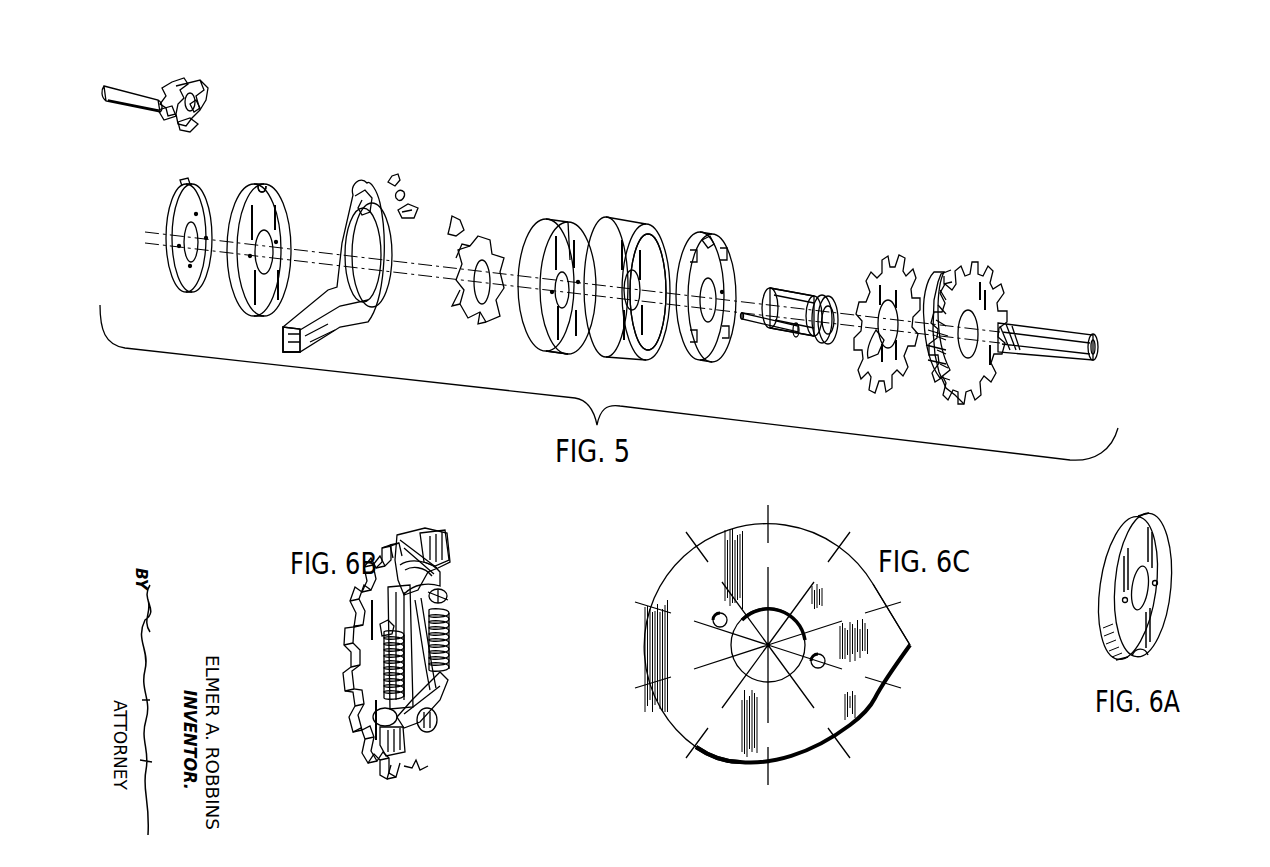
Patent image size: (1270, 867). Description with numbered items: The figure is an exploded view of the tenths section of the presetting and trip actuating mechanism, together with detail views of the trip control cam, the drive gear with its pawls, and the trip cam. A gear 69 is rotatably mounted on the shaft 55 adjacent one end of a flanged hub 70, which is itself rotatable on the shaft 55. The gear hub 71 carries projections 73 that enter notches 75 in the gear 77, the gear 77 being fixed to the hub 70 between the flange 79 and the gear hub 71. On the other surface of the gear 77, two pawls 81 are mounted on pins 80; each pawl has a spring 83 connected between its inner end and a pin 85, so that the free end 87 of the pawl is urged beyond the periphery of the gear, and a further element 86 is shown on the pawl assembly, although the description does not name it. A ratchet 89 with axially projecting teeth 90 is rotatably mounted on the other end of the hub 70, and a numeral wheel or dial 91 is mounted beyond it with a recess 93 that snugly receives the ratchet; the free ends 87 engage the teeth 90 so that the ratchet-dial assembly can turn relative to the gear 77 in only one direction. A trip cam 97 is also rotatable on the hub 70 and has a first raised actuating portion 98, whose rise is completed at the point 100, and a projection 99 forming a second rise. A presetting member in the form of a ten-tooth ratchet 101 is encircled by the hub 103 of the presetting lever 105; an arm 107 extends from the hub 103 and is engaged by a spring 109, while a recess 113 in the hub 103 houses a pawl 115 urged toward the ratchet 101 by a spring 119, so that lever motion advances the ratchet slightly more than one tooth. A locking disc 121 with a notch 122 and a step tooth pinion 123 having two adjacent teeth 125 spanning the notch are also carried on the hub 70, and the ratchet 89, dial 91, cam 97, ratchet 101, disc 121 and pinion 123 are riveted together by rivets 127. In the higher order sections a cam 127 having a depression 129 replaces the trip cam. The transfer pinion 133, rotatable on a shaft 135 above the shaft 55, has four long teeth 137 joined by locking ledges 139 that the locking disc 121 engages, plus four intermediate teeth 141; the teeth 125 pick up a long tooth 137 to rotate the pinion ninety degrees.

In FIG. 5, the shaft 55 is at (1074, 338).
In FIG. 5, the gear 69 is at (1000, 296).
In FIG. 5, the flanged hub 70 is at (830, 300).
In FIG. 5, the gear hub 71 is at (950, 282).
In FIG. 5, the projections 73 is at (930, 280).
In FIG. 5, the notches 75 is at (868, 348).
In FIG. 6B, the notches 75 is at (450, 652).
In FIG. 5, the gear 77 is at (900, 264).
In FIG. 6B, the gear 77 is at (354, 664).
In FIG. 5, the flange 79 is at (806, 296).
In FIG. 6B, the pins 80 is at (450, 580).
In FIG. 6B, the pawls 81 is at (412, 568).
In FIG. 6B, the spring 83 is at (384, 676).
In FIG. 6B, the pin 85 is at (448, 598).
In FIG. 6B, the pivot 86 is at (438, 720).
In FIG. 6B, the free end 87 is at (449, 538).
In FIG. 5, the ratchet 89 is at (722, 262).
In FIG. 5, the axially projecting teeth 90 is at (710, 240).
In FIG. 5, the numeral wheel or dial 91 is at (636, 222).
In FIG. 5, the recess 93 is at (662, 256).
In FIG. 5, the trip cam 97 is at (532, 336).
In FIG. 6C, the trip cam 97 is at (648, 660).
In FIG. 5, the first raised actuating portion 98 is at (574, 338).
In FIG. 6C, the first raised actuating portion 98 is at (884, 696).
In FIG. 5, the projection 99 is at (582, 250).
In FIG. 6C, the projection 99 is at (912, 648).
In FIG. 6C, the completion point of first rise 100 is at (744, 764).
In FIG. 5, the ratchet 101 is at (496, 242).
In FIG. 5, the hub 103 is at (356, 182).
In FIG. 5, the presetting lever 105 is at (292, 348).
In FIG. 5, the arm 107 is at (400, 180).
In FIG. 5, the spring 109 is at (405, 198).
In FIG. 5, the recess 113 is at (356, 194).
In FIG. 5, the pawl 115 is at (418, 213).
In FIG. 5, the spring 119 is at (460, 214).
In FIG. 5, the locking disc 121 is at (280, 194).
In FIG. 5, the notch 122 is at (261, 188).
In FIG. 5, the step tooth pinion 123 is at (178, 257).
In FIG. 5, the teeth 125 is at (190, 188).
In FIG. 5, the rivets / cam 127 is at (748, 328).
In FIG. 6A, the rivets / cam 127 is at (1164, 560).
In FIG. 6A, the depression 129 is at (1141, 650).
In FIG. 5, the transfer pinion 133 is at (207, 96).
In FIG. 5, the shaft 135 is at (127, 94).
In FIG. 5, the long teeth 137 is at (200, 125).
In FIG. 5, the locking ledges 139 is at (202, 108).
In FIG. 5, the teeth 141 is at (170, 118).